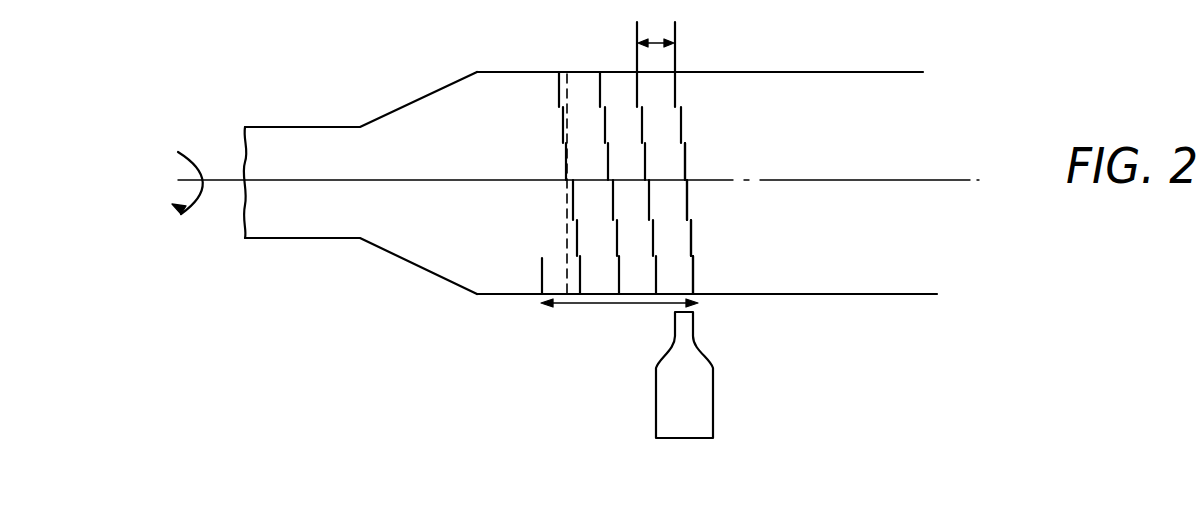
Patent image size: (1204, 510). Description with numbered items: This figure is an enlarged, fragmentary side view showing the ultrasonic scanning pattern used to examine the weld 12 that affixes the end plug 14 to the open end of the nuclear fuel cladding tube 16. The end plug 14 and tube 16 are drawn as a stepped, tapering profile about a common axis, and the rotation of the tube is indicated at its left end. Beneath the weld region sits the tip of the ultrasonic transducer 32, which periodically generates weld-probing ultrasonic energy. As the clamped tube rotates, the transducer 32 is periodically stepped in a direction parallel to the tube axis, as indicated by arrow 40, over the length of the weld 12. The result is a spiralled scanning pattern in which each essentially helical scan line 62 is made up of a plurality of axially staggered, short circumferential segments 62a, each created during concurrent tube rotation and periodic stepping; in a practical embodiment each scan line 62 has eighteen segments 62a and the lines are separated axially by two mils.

The weld 12 is at (587, 71).
The end plug 14 is at (292, 147).
The nuclear fuel cladding tube 16 is at (835, 88).
The ultrasonic transducer 32 is at (697, 390).
The arrow 40 is at (601, 306).
The helical scan line 62 is at (688, 170).
The circumferential segment 62a is at (697, 282).